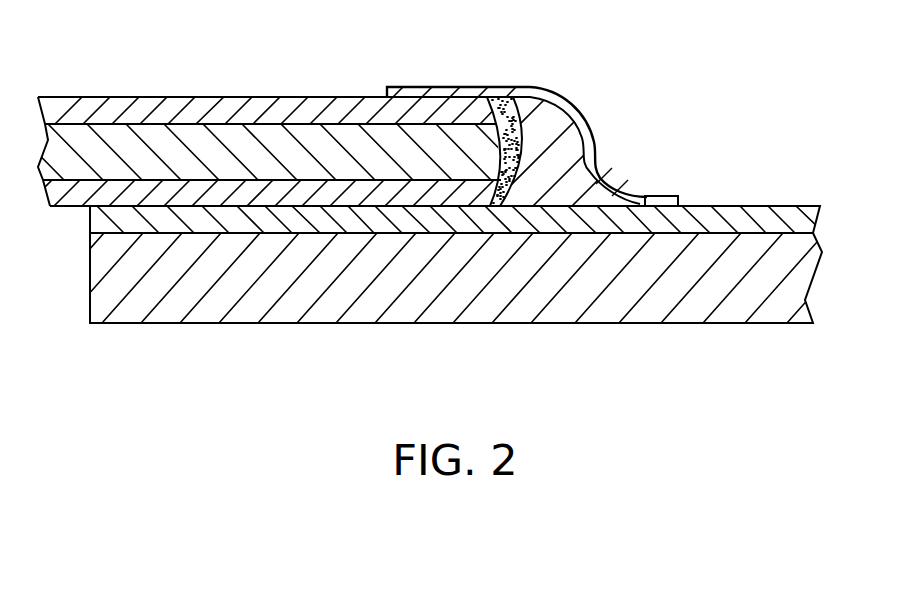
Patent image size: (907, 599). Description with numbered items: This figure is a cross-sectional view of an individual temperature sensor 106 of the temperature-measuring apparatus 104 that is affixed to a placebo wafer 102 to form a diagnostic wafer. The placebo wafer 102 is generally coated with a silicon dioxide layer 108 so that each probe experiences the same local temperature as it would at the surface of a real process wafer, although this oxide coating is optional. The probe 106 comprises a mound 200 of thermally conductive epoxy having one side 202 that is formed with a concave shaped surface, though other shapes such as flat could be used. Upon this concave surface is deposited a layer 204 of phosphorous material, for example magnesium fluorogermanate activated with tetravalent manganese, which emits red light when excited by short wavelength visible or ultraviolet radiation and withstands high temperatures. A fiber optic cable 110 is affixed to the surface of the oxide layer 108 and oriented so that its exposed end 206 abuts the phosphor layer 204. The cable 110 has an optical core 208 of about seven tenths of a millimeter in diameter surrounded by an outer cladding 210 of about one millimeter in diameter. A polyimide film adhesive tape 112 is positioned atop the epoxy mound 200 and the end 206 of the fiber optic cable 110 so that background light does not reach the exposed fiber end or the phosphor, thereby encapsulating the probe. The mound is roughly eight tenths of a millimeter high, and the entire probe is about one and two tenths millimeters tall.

The placebo wafer 102 is at (802, 288).
The apparatus 104 is at (808, 163).
The sensor 106 is at (576, 79).
The silicon dioxide layer 108 is at (805, 227).
The fiber optic cable 110 is at (78, 90).
The polyimide film adhesive tape 112 is at (652, 195).
The mound 200 is at (570, 148).
The side 202 is at (539, 95).
The layer of phosphorous material 204 is at (489, 98).
The exposed end 206 is at (497, 163).
The optical core 208 is at (289, 152).
The outer cladding 210 is at (148, 100).